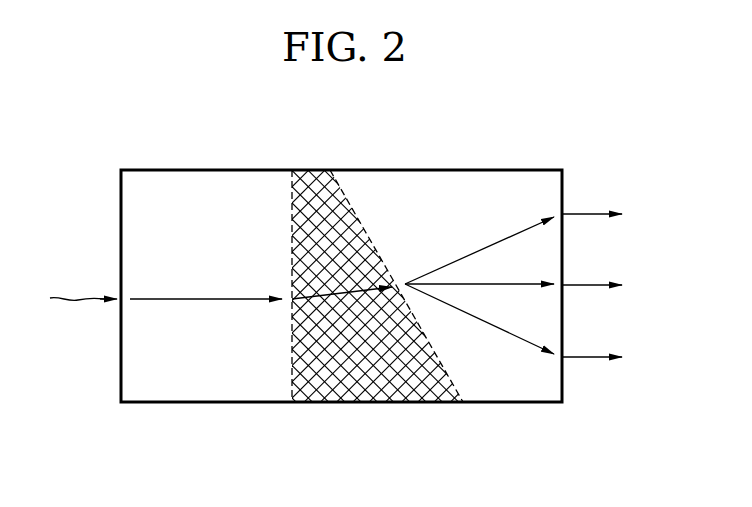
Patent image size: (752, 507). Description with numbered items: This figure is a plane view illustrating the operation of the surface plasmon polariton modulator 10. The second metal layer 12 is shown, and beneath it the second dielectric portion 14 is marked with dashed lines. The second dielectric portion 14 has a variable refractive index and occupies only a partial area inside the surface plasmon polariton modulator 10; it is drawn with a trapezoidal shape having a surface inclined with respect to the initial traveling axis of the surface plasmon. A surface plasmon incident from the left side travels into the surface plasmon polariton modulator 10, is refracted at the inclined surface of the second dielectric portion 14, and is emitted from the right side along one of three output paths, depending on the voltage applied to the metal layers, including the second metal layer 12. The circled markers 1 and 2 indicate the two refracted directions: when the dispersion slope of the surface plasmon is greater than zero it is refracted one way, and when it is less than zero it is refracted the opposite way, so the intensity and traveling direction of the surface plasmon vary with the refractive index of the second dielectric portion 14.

The surface plasmon polariton modulator 10 is at (274, 468).
The second metal layer 12 is at (215, 182).
The second dielectric portion 14 is at (382, 387).
The first light path 1 is at (478, 249).
The second light path 2 is at (478, 323).